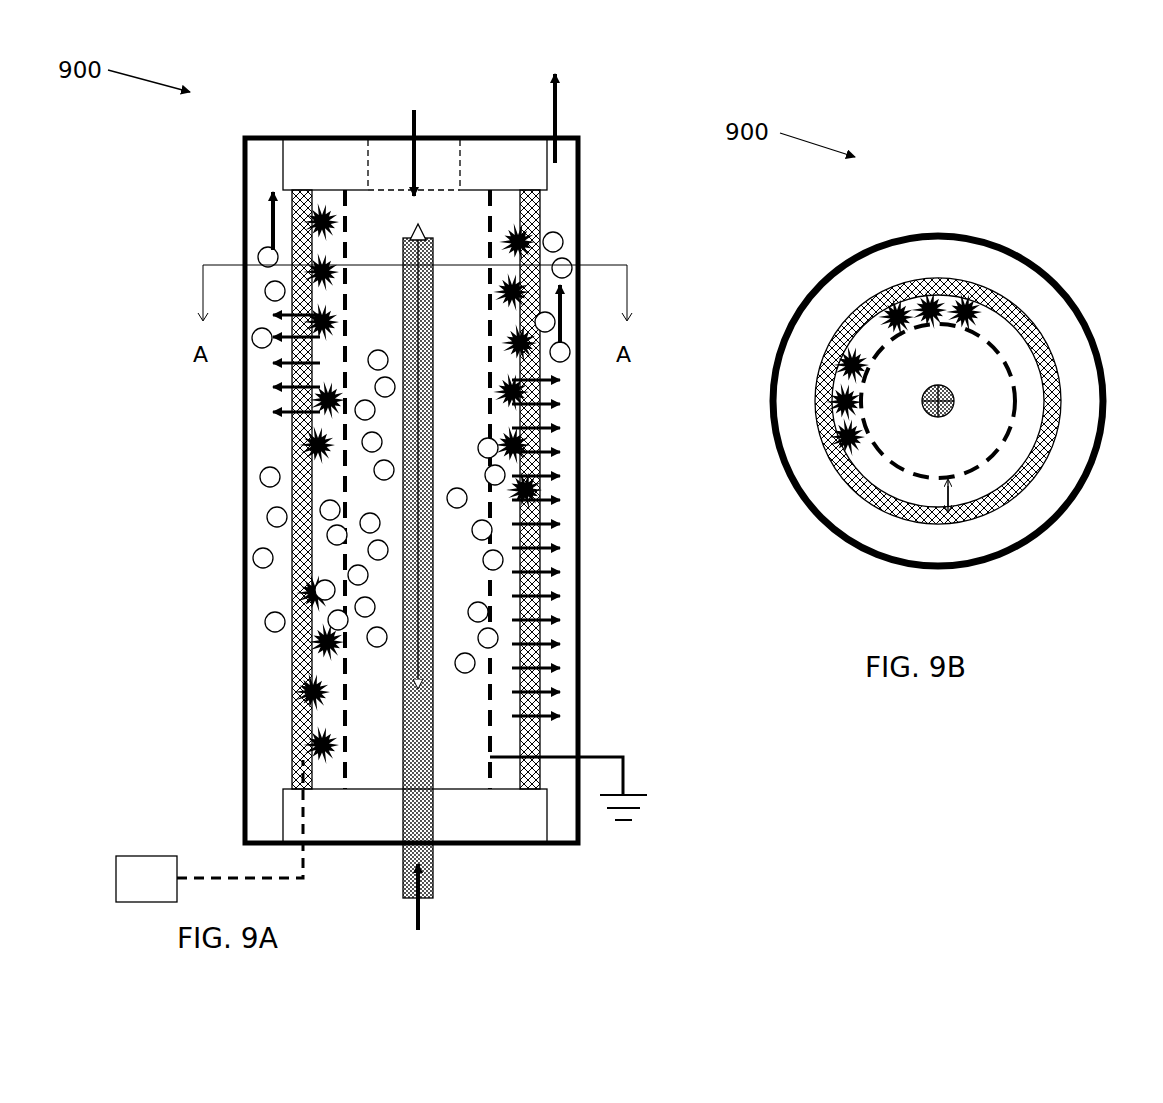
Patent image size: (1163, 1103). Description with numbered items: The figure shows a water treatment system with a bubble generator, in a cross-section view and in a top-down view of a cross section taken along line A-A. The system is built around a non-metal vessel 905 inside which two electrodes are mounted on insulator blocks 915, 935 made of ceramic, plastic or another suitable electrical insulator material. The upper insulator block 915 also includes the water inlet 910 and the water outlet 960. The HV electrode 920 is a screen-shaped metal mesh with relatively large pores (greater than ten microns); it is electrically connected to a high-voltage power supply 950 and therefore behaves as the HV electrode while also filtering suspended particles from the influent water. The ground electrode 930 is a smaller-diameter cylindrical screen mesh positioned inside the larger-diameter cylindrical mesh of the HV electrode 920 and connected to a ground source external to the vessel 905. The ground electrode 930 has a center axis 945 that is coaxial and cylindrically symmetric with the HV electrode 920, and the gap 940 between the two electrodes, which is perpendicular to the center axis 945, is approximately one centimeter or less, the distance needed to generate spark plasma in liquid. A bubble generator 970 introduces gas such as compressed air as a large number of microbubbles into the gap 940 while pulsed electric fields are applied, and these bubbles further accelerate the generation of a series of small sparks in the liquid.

In FIG. 9A, the non-metal vessel 905 is at (243, 447).
In FIG. 9B, the non-metal vessel 905 is at (783, 333).
In FIG. 9A, the water inlet 910 is at (413, 135).
In FIG. 9A, the insulator block 915 is at (320, 138).
In FIG. 9A, the HV electrode 920 is at (298, 605).
In FIG. 9B, the HV electrode 920 is at (815, 392).
In FIG. 9A, the ground electrode 930 is at (492, 627).
In FIG. 9B, the ground electrode 930 is at (887, 462).
In FIG. 9A, the insulator block 935 is at (547, 818).
In FIG. 9A, the gap 940 is at (330, 525).
In FIG. 9B, the gap 940 is at (962, 497).
In FIG. 9A, the center axis 945 is at (425, 430).
In FIG. 9B, the center axis 945 is at (950, 405).
In FIG. 9A, the high-voltage power supply 950 is at (147, 855).
In FIG. 9A, the water outlet 960 is at (558, 138).
In FIG. 9A, the bubble generator 970 is at (433, 810).
In FIG. 9B, the bubble generator 970 is at (950, 385).